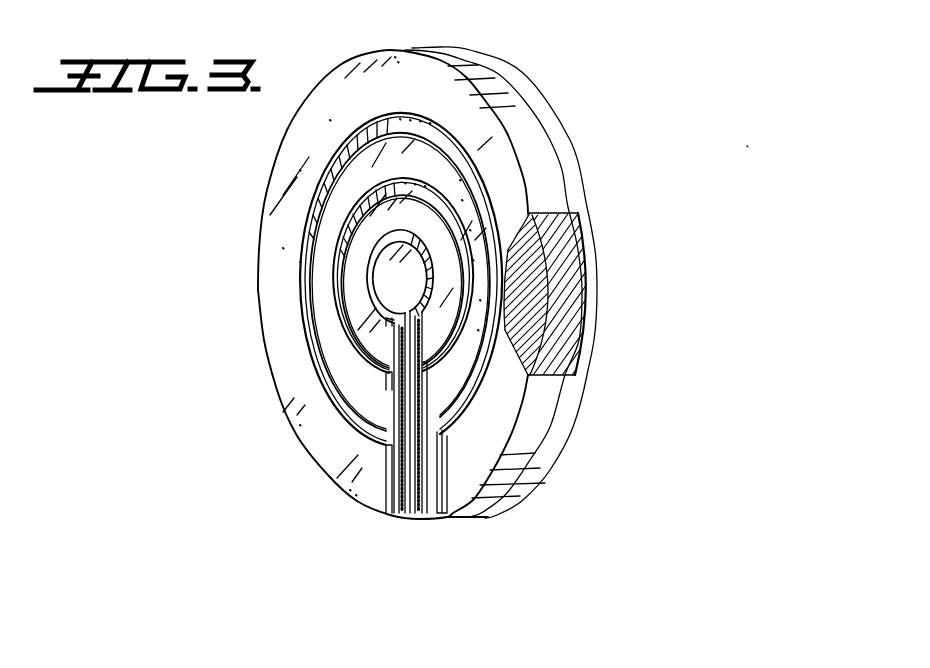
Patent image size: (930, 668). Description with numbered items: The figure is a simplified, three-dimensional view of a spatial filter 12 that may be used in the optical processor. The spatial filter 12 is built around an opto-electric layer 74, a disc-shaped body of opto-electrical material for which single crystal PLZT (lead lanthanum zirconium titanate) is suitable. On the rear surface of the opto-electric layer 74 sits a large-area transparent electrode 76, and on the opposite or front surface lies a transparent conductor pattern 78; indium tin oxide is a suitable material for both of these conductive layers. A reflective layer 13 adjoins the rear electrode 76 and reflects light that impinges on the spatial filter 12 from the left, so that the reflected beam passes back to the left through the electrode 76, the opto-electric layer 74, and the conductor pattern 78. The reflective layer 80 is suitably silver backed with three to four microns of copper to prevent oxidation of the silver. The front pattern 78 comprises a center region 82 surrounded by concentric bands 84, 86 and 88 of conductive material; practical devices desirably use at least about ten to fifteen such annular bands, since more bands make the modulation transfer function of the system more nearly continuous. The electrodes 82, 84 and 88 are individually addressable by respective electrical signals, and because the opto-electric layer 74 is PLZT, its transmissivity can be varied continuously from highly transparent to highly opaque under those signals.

The spatial filter 12 is at (597, 144).
The reflective layer 13 is at (592, 300).
The opto-electric layer 74 is at (545, 410).
The transparent electrode 76 is at (572, 207).
The transparent conductor pattern 78 is at (250, 412).
The reflective layer 80 is at (570, 272).
The center region 82 is at (393, 278).
The concentric band 84 is at (353, 272).
The concentric band 86 is at (322, 252).
The concentric band 88 is at (280, 229).